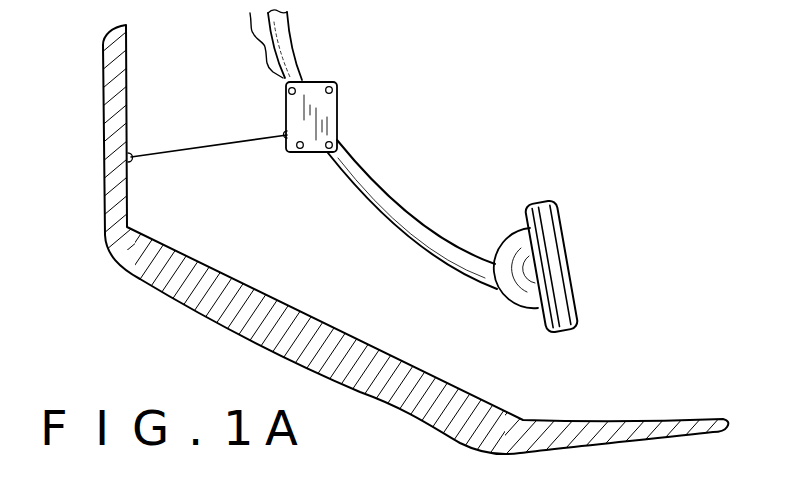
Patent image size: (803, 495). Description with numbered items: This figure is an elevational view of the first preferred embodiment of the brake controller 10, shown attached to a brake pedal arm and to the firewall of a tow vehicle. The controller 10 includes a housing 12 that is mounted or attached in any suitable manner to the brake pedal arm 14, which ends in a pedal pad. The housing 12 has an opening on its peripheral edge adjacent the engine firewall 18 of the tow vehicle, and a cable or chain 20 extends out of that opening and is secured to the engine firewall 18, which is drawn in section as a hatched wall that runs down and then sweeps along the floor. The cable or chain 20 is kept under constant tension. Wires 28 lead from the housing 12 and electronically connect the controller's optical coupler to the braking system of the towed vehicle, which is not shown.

The brake controller 10 is at (353, 79).
The housing 12 is at (323, 113).
The brake pedal arm 14 is at (393, 218).
The engine firewall 18 is at (113, 175).
The cable or chain 20 is at (212, 150).
The wires 28 is at (253, 33).